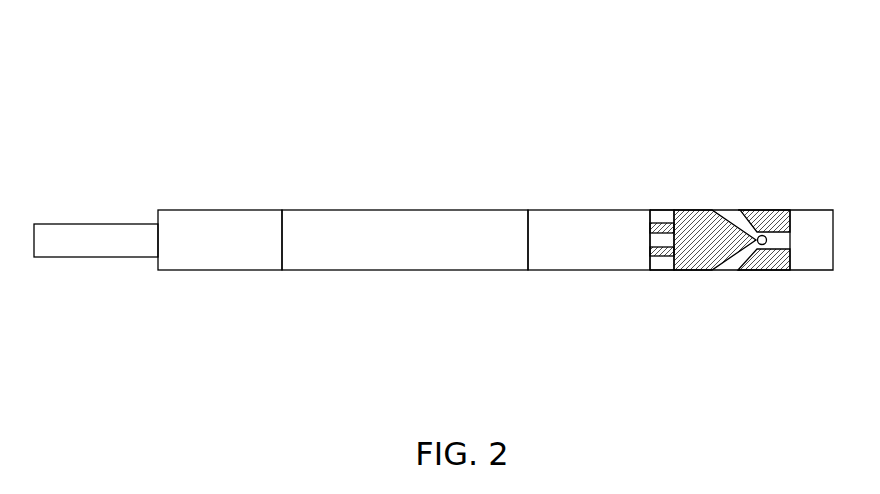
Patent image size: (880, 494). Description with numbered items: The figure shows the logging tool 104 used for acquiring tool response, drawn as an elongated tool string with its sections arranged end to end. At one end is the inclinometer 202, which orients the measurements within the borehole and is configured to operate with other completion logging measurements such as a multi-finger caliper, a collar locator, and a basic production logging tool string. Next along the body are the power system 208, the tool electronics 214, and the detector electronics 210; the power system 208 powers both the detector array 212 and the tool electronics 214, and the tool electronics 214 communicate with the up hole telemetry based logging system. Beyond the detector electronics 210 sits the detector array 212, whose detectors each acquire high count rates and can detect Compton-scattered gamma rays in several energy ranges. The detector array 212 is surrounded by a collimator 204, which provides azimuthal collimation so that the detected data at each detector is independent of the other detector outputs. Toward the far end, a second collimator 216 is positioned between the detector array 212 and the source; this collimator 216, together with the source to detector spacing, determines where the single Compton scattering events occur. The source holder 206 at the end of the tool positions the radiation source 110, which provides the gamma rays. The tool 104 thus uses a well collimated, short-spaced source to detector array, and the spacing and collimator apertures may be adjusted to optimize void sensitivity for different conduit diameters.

The logging tool 104 is at (433, 166).
The inclinometer 202 is at (93, 230).
The power system 208 is at (220, 217).
The tool electronics 214 is at (393, 217).
The detector electronics 210 is at (598, 217).
The detector array 212 is at (643, 237).
The collimator 204 is at (648, 232).
The collimator 216 is at (752, 230).
The radiation source 110 is at (779, 258).
The source holder 206 is at (823, 215).